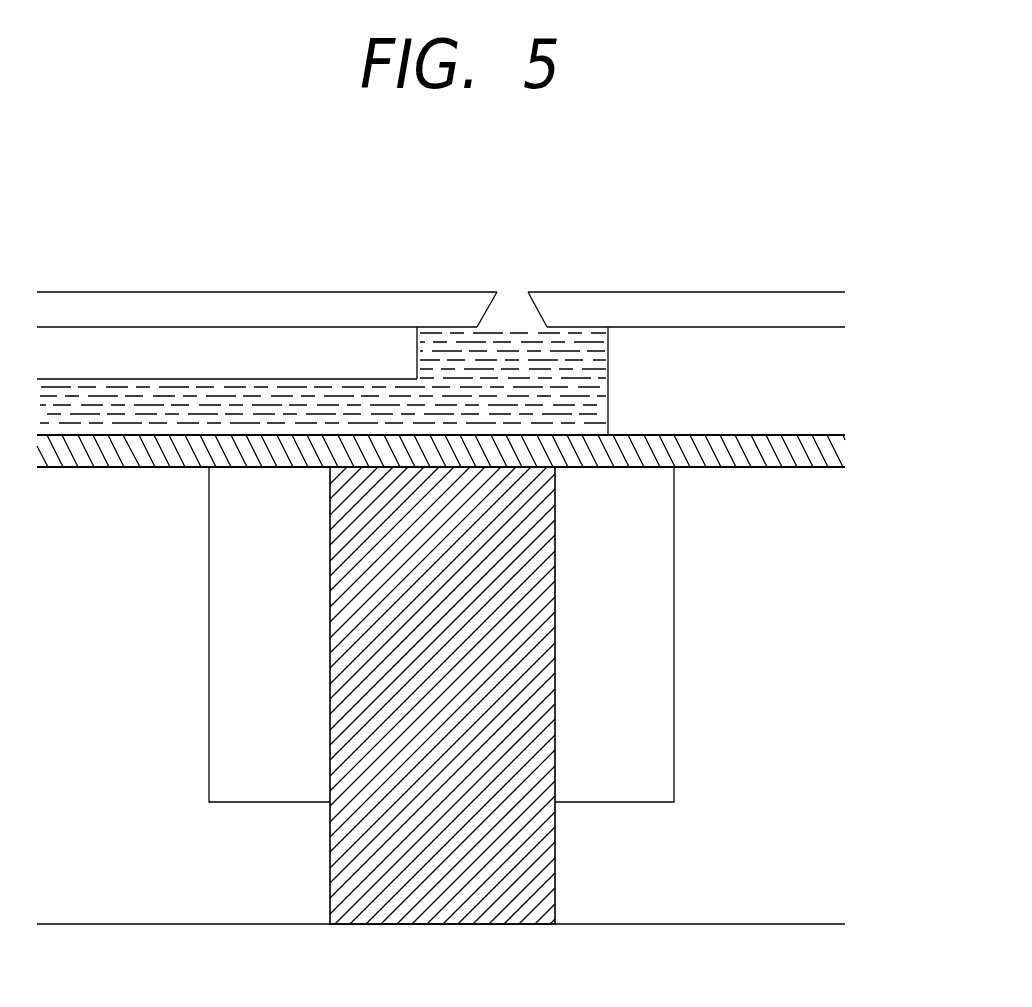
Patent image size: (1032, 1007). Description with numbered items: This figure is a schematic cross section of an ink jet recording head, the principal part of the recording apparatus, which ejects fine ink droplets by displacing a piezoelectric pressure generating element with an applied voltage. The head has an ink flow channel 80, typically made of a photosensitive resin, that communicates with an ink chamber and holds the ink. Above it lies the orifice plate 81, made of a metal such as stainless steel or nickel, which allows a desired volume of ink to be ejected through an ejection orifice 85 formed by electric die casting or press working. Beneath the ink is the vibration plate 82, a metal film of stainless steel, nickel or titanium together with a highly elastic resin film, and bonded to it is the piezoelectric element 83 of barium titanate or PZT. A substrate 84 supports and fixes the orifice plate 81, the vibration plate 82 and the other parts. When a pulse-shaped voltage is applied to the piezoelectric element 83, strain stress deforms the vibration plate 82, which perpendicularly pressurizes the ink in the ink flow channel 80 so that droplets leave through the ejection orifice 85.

The ink flow channel 80 is at (283, 347).
The orifice plate 81 is at (797, 302).
The vibration plate 82 is at (766, 468).
The piezoelectric element 83 is at (538, 700).
The substrate 84 is at (674, 614).
The ejection orifice 85 is at (510, 308).